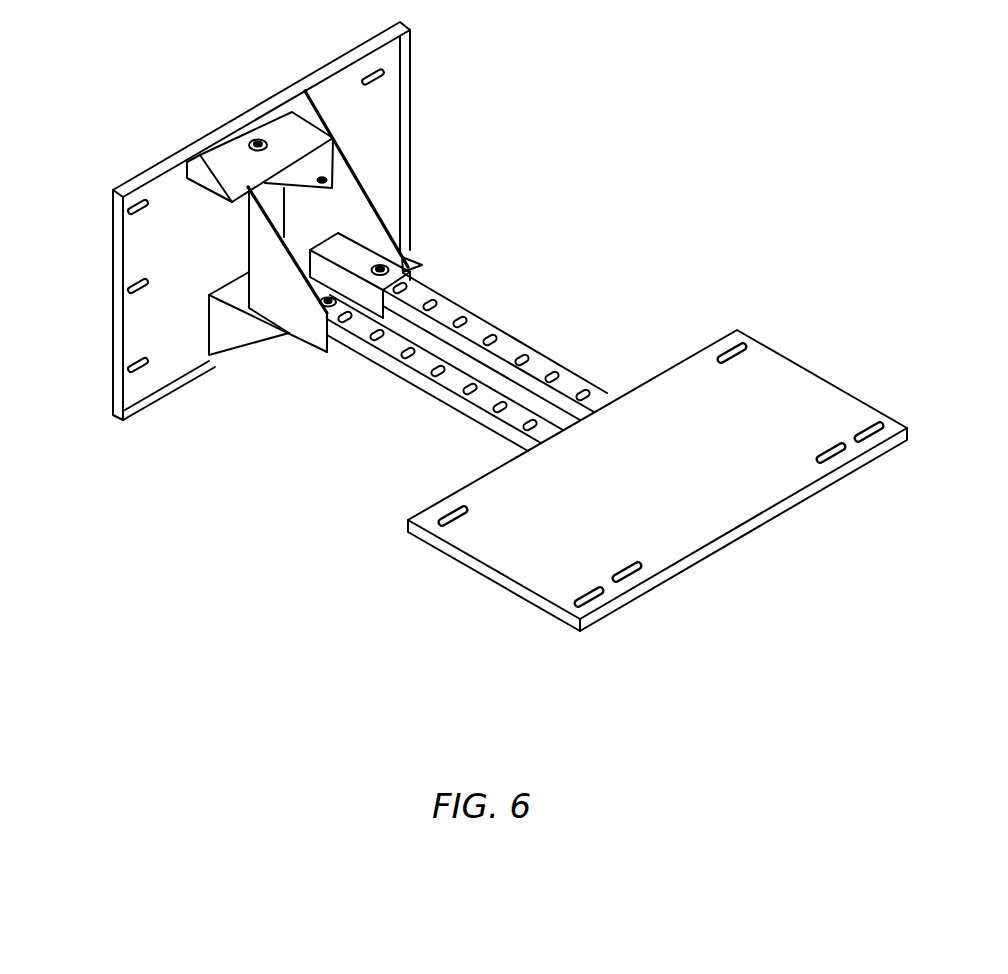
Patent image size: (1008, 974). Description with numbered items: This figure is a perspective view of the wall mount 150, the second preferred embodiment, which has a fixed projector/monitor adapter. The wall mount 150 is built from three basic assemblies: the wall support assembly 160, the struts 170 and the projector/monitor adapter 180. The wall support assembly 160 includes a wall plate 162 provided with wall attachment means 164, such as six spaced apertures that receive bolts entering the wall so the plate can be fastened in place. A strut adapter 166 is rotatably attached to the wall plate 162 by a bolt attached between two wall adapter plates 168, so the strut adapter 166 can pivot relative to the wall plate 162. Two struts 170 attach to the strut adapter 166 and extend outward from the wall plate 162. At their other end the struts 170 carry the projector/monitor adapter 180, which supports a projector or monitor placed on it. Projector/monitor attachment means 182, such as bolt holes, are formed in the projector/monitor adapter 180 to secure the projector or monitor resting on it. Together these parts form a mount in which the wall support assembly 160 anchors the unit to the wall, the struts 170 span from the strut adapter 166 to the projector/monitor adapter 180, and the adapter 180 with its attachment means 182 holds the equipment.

The wall mount 150 is at (540, 165).
The wall support assembly 160 is at (118, 67).
The wall plate 162 is at (151, 163).
The wall attachment means 164 is at (142, 380).
The strut adapter 166 is at (350, 197).
The wall adapter plates 168 is at (290, 128).
The struts 170 is at (487, 326).
The projector/monitor adapter 180 is at (502, 587).
The projector/monitor attachment means 182 is at (833, 461).